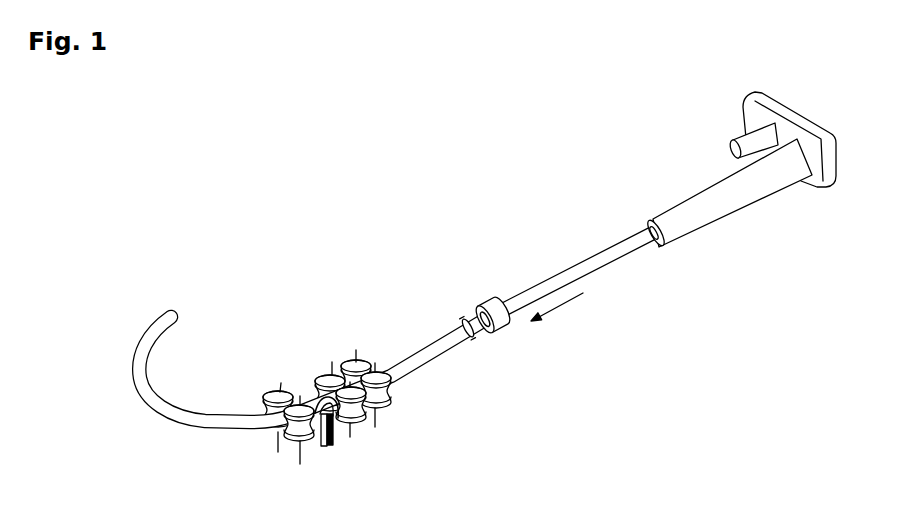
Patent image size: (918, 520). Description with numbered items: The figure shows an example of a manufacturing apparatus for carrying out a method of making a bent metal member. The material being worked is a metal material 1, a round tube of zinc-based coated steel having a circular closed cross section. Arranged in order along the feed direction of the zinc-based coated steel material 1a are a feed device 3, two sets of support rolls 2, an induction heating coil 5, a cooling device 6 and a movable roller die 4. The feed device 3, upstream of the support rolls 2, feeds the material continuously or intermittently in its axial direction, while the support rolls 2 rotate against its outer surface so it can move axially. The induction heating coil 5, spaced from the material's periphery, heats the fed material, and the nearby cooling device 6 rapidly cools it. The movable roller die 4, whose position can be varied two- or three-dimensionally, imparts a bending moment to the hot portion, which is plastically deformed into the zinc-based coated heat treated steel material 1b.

The metal material 1 is at (397, 354).
The zinc-based coated steel material 1a is at (418, 364).
The zinc-based coated heat treated steel material 1b is at (218, 423).
The support rolls 2 is at (323, 369).
The feed device 3 is at (663, 209).
The movable roller die 4 is at (282, 381).
The induction heating coil 5 is at (338, 428).
The cooling device 6 is at (358, 427).